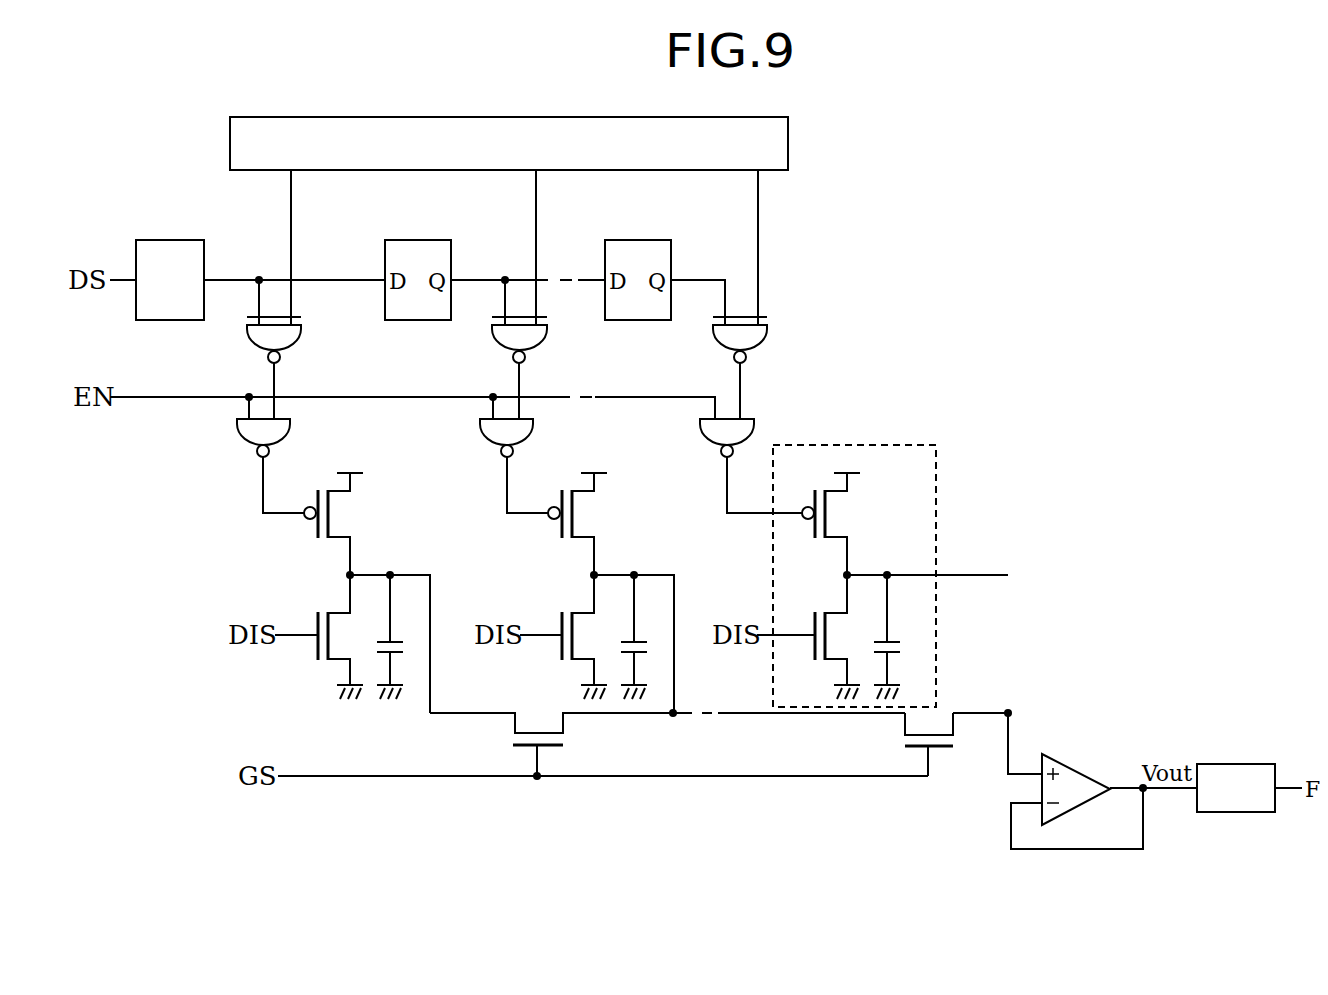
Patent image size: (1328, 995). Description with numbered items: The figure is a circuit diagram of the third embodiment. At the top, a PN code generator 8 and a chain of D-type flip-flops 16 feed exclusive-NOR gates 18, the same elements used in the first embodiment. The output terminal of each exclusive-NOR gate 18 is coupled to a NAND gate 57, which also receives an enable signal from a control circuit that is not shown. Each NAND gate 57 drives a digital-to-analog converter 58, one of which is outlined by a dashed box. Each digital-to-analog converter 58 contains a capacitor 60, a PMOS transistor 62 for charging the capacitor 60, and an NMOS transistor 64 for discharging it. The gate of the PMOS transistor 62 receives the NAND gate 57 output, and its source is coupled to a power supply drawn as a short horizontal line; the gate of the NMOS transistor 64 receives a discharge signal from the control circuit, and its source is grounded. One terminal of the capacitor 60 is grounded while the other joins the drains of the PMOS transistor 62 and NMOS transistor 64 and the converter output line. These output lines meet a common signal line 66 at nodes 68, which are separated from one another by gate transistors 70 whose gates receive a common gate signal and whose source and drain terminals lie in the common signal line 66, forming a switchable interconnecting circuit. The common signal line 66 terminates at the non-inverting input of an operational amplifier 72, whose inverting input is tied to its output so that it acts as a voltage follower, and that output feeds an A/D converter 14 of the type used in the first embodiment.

The PN code generator 8 is at (788, 145).
The D-type flip-flop 16 is at (176, 240).
The exclusive-NOR gate 18 is at (763, 337).
The NAND gate 57 is at (237, 438).
The digital-to-analog converter 58 is at (937, 515).
The capacitor 60 is at (903, 645).
The PMOS transistor 62 is at (838, 512).
The NMOS transistor 64 is at (813, 665).
The common signal line 66 is at (980, 717).
The node 68 is at (671, 716).
The gate transistor 70 is at (512, 728).
The operational amplifier 72 is at (1080, 768).
The A/D converter 14 is at (1237, 764).